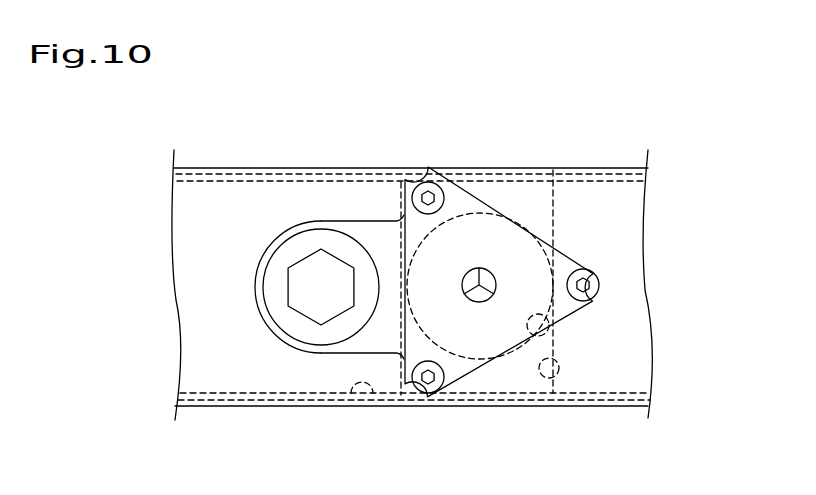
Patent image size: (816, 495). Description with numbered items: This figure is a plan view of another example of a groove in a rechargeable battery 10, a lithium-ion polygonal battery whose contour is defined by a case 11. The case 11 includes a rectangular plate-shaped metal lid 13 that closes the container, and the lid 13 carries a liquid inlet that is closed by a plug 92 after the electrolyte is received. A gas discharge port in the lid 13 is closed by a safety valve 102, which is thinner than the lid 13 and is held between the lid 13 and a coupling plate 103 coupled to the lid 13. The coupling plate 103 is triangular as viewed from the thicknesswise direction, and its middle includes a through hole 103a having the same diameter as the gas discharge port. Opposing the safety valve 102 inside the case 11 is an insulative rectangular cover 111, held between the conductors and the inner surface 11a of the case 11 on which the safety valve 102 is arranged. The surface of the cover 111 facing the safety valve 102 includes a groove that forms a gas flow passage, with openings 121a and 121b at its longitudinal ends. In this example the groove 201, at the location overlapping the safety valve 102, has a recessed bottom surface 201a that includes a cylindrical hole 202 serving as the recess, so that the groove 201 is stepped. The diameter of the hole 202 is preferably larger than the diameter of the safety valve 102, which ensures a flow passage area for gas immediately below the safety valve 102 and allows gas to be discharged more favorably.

The rechargeable battery 10 is at (628, 149).
The case 11 is at (401, 285).
The inner surface of the case 11a is at (362, 404).
The lid 13 is at (222, 408).
The plug 92 is at (288, 283).
The safety valve 102 is at (479, 302).
The coupling plate 103 is at (546, 243).
The through hole 103a is at (463, 284).
The cover 111 is at (618, 395).
The opening 121a is at (549, 392).
The opening 121b is at (547, 167).
The groove 201 is at (560, 368).
The bottom surface 201a is at (478, 390).
The cylindrical hole 202 is at (547, 333).